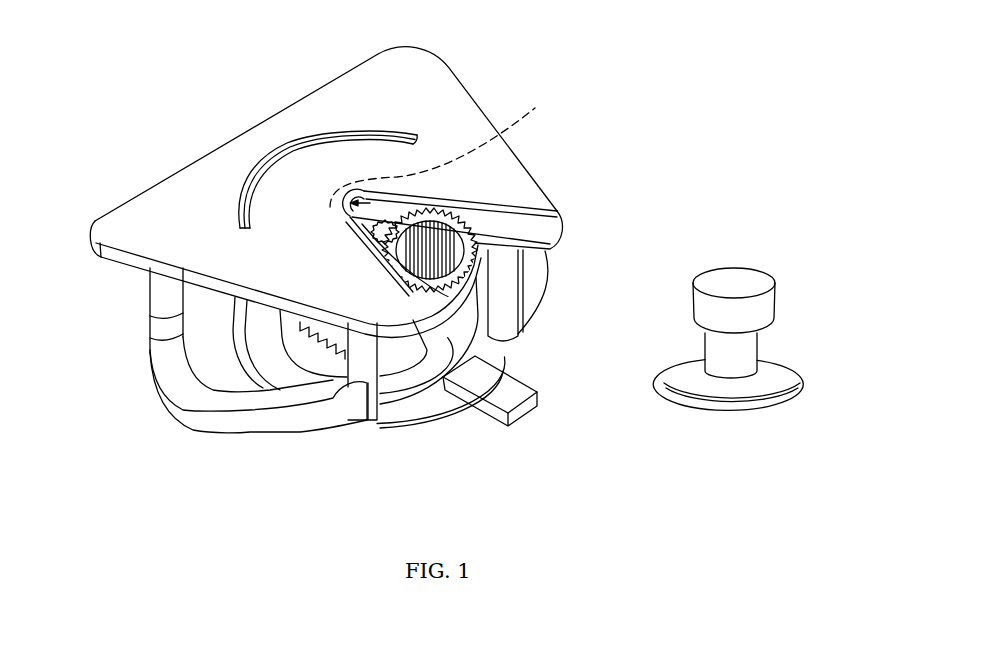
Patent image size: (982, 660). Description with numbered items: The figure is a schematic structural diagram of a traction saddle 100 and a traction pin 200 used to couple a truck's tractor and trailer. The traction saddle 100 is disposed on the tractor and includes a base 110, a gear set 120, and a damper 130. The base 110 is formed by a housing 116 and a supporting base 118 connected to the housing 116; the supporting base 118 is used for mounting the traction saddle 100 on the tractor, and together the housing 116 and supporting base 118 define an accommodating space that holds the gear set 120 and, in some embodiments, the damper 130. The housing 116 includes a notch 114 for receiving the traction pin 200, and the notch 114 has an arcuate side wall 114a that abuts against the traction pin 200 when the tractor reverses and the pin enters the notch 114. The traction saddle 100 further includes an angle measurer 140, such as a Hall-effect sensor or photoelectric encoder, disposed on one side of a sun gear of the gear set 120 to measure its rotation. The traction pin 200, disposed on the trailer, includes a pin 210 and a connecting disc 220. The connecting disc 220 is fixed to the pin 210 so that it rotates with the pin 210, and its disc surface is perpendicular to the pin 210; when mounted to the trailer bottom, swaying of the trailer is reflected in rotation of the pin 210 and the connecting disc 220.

The traction saddle 100 is at (369, 262).
The base 110 is at (148, 216).
The notch 114 is at (487, 227).
The arcuate side wall 114a is at (458, 147).
The housing 116 is at (441, 89).
The supporting base 118 is at (213, 418).
The gear set 120 is at (477, 259).
The damper 130 is at (393, 393).
The angle measurer 140 is at (490, 406).
The traction pin 200 is at (787, 337).
The pin 210 is at (745, 310).
The connecting disc 220 is at (773, 367).